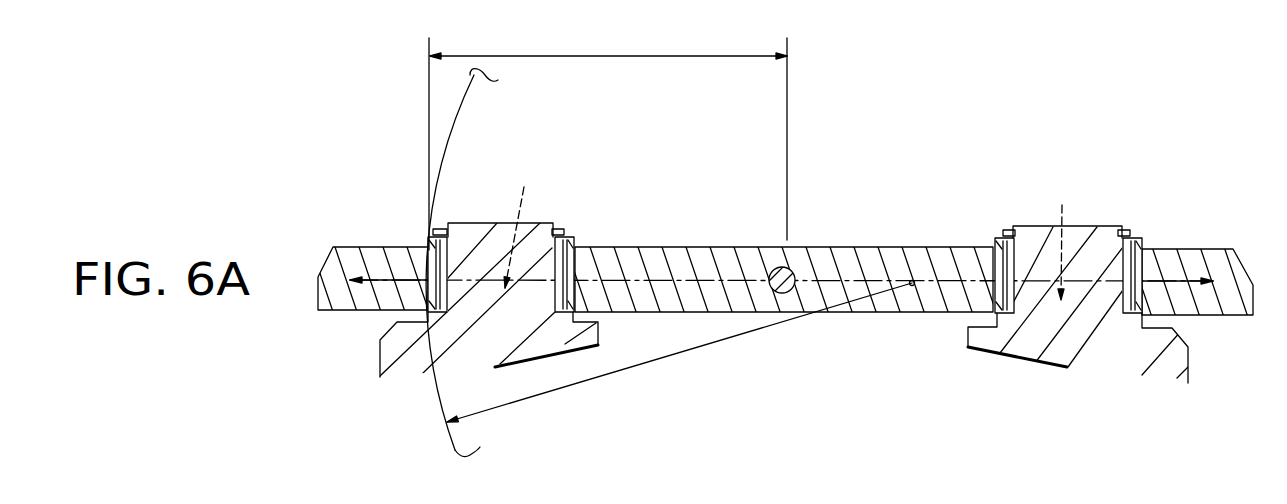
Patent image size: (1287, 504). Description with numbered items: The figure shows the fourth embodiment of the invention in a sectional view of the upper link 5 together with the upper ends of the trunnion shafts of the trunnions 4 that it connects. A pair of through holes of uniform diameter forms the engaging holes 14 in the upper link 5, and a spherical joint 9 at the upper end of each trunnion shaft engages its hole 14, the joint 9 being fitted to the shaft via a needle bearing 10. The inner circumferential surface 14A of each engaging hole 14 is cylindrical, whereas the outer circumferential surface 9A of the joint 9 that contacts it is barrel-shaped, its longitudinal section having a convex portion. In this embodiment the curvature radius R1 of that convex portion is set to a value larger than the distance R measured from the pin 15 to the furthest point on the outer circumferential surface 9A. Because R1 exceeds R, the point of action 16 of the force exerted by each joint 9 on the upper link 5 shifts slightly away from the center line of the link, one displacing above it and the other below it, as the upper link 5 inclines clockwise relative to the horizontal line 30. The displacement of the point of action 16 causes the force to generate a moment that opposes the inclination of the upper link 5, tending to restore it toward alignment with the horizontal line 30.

The trunnion 4 is at (551, 222).
The upper link 5 is at (837, 247).
The horizontal line 30 is at (685, 280).
The spherical joint 9 is at (435, 240).
The outer circumferential surface 9A is at (427, 253).
The needle bearing 10 is at (448, 245).
The engaging hole 14 is at (788, 229).
The inner circumferential surface 14A is at (567, 311).
The pin 15 is at (773, 293).
The point of action 16 is at (427, 262).
The distance R is at (608, 139).
The radius R1 is at (686, 352).